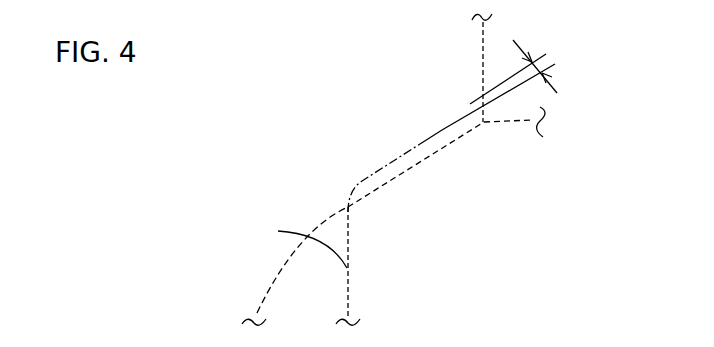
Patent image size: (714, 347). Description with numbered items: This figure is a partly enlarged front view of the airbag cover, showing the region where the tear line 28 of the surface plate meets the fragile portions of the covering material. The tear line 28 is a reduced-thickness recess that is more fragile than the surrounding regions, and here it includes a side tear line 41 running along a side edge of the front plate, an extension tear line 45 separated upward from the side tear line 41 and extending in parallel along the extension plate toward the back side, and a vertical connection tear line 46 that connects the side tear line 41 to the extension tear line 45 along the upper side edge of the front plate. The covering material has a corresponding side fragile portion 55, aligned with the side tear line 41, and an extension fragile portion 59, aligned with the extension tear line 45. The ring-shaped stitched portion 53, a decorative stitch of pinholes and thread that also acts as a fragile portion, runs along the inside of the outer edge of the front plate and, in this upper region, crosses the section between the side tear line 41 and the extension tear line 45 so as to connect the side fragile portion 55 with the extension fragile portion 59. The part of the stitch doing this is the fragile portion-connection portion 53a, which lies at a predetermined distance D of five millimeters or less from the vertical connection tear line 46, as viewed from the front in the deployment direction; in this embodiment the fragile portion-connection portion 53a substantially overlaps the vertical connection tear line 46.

The tear line 28 is at (441, 128).
The side tear line 41 is at (300, 244).
The extension tear line 45 is at (483, 54).
The vertical connection tear line 46 is at (398, 160).
The stitched portion 53 is at (273, 277).
The fragile portion-connection portion 53a is at (373, 188).
The side fragile portion 55 is at (349, 295).
The extension fragile portion 59 is at (489, 124).
The distance D is at (539, 66).